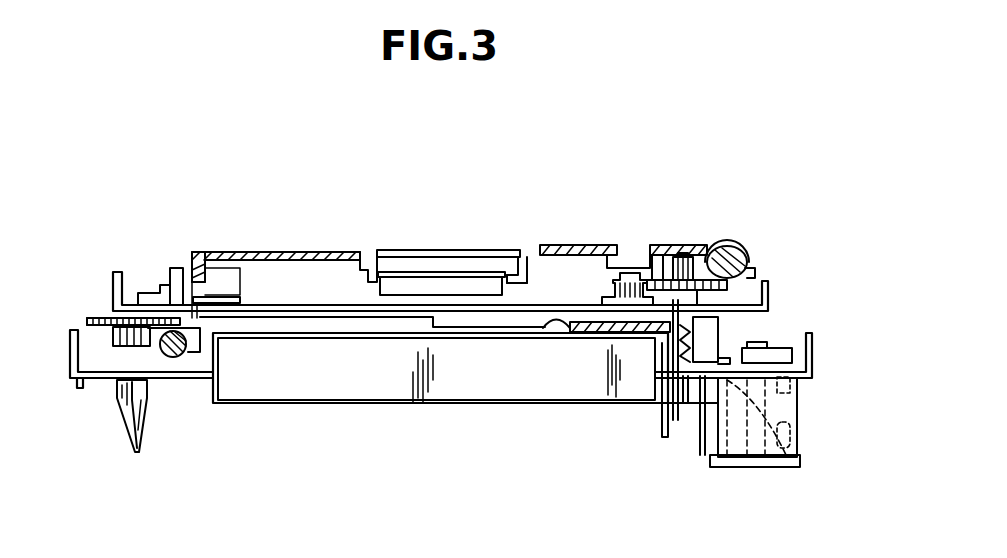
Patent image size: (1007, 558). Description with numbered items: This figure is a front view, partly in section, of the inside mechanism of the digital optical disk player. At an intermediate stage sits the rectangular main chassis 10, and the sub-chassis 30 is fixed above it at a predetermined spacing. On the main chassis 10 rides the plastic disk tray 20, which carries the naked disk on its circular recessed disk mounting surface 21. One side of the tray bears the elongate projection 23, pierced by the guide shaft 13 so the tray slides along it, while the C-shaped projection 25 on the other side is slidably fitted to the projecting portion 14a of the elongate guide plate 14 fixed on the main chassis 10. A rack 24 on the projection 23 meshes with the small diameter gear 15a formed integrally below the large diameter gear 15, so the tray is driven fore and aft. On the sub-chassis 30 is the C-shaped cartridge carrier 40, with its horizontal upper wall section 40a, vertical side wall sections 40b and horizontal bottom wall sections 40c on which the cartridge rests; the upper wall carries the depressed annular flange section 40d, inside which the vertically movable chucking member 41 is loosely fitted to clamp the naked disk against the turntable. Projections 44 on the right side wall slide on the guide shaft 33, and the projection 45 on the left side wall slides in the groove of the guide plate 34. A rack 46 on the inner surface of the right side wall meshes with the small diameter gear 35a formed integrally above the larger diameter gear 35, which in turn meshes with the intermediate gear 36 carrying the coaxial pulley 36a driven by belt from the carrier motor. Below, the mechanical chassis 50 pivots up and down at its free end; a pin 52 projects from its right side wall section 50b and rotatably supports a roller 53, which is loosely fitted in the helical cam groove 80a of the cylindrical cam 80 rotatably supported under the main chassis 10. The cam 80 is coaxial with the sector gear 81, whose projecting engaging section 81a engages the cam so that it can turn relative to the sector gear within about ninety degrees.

The main chassis 10 is at (797, 348).
The guide shaft 13 is at (180, 356).
The guide plate 14 is at (714, 333).
The projecting portion 14a is at (675, 380).
The large diameter gear 15 is at (93, 318).
The small diameter gear 15a is at (96, 323).
The disk tray 20 is at (363, 324).
The disk mounting surface 21 is at (546, 323).
The elongate projection 23 is at (188, 353).
The rack 24 is at (152, 338).
The projection 25 is at (672, 323).
The sub-chassis 30 is at (770, 289).
The guide shaft 33 is at (745, 261).
The guide plate 34 is at (177, 268).
The larger diameter gear 35 is at (650, 280).
The small diameter gear 35a is at (681, 257).
The intermediate gear 36 is at (598, 290).
The pulley 36a is at (557, 246).
The cartridge carrier 40 is at (364, 244).
The upper wall section 40a is at (320, 252).
The side wall section 40b is at (204, 280).
The bottom wall section 40c is at (229, 297).
The annular flange section 40d is at (508, 281).
The chucking member 41 is at (453, 287).
The projection 44 is at (729, 250).
The projection 45 is at (163, 283).
The rack 46 is at (708, 257).
The mechanical chassis 50 is at (206, 383).
The right side wall section 50b is at (664, 432).
The pin 52 is at (686, 404).
The roller 53 is at (707, 404).
The cylindrical cam 80 is at (790, 405).
The helical cam groove 80a is at (795, 437).
The sector gear 81 is at (768, 402).
The engaging section 81a is at (792, 390).